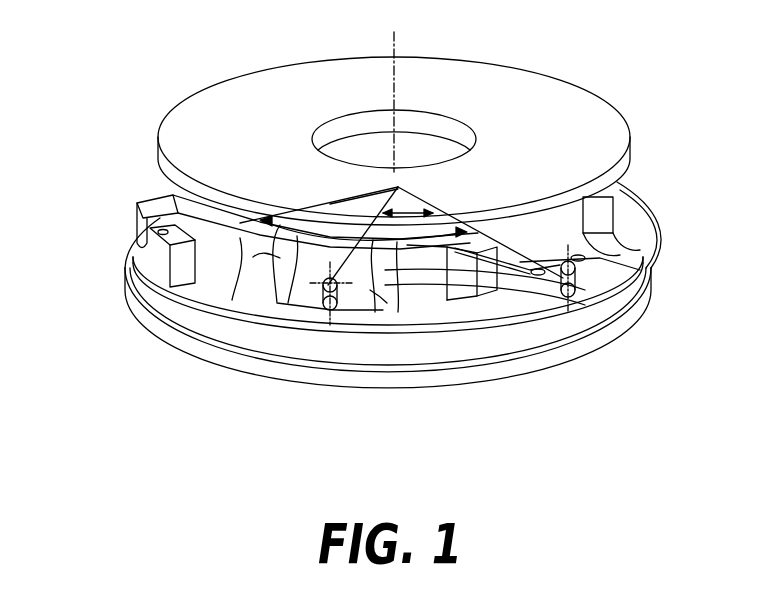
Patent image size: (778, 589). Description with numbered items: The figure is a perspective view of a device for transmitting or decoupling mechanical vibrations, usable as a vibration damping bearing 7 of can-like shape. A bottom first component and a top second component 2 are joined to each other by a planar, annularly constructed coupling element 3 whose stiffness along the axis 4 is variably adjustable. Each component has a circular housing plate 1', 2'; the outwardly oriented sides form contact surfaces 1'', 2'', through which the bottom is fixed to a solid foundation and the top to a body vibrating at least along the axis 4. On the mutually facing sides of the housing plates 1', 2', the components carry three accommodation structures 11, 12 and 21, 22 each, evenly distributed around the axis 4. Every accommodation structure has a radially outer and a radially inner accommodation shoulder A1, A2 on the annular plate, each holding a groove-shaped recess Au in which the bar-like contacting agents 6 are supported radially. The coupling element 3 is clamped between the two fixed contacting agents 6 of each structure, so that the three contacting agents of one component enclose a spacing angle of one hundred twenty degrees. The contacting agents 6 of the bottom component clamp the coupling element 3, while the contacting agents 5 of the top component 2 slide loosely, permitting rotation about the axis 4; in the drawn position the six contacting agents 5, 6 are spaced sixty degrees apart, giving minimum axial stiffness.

The second component 2 is at (409, 120).
The contact surface 2'' is at (402, 131).
The circular housing plate 2' is at (433, 177).
The axis 4 is at (395, 53).
The accommodation structure 22 is at (612, 203).
The accommodation structure 11 is at (137, 203).
The contacting agent 6 is at (580, 270).
The groove-shaped recess Au is at (590, 298).
The bearing arrangement 7 is at (114, 353).
The planar coupling element 3 is at (235, 255).
The contacting agent 5 is at (327, 308).
The accommodation structure 21 is at (407, 245).
The contact surface 1'' is at (388, 372).
The circular housing plate 1' is at (393, 292).
The accommodation structure 12 is at (555, 302).
The accommodation shoulder A1 is at (533, 307).
The accommodation shoulder A2 is at (447, 247).